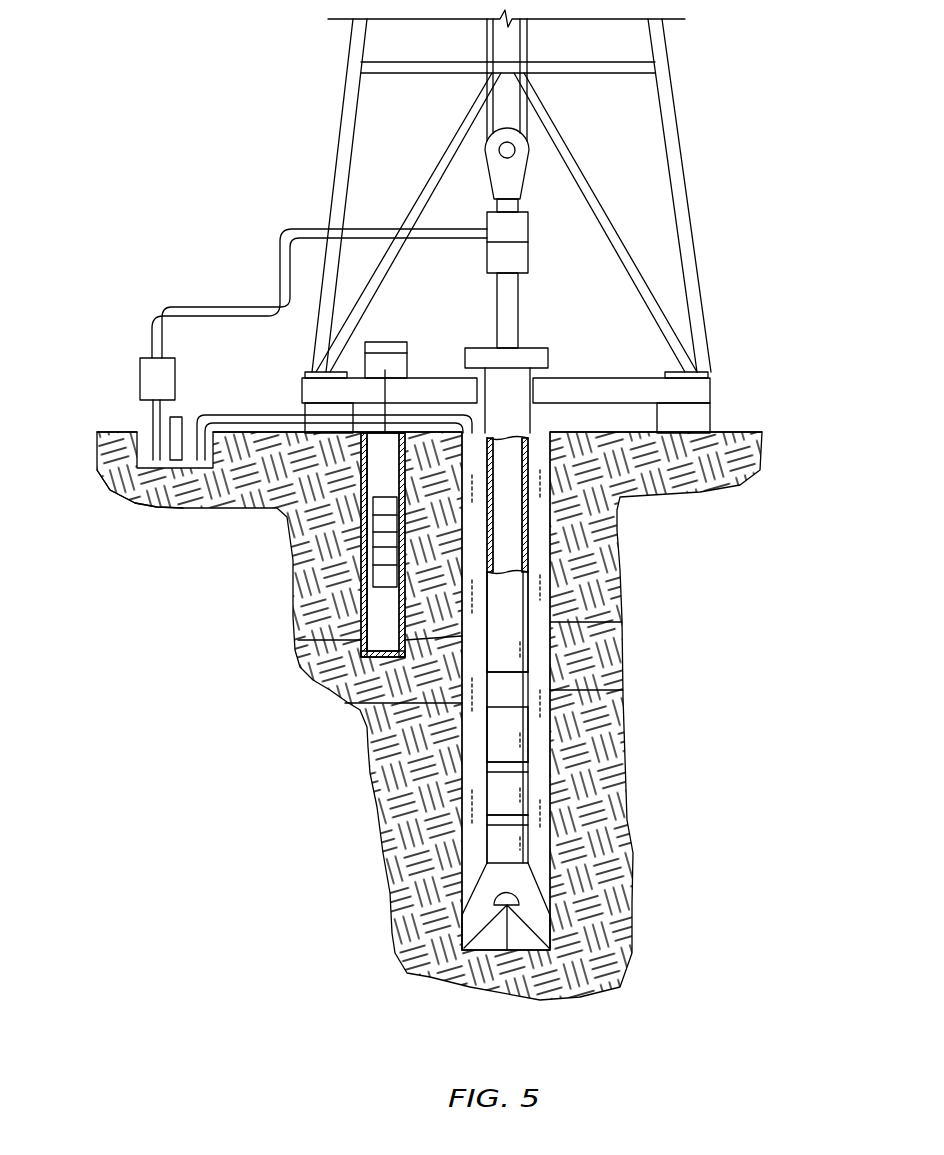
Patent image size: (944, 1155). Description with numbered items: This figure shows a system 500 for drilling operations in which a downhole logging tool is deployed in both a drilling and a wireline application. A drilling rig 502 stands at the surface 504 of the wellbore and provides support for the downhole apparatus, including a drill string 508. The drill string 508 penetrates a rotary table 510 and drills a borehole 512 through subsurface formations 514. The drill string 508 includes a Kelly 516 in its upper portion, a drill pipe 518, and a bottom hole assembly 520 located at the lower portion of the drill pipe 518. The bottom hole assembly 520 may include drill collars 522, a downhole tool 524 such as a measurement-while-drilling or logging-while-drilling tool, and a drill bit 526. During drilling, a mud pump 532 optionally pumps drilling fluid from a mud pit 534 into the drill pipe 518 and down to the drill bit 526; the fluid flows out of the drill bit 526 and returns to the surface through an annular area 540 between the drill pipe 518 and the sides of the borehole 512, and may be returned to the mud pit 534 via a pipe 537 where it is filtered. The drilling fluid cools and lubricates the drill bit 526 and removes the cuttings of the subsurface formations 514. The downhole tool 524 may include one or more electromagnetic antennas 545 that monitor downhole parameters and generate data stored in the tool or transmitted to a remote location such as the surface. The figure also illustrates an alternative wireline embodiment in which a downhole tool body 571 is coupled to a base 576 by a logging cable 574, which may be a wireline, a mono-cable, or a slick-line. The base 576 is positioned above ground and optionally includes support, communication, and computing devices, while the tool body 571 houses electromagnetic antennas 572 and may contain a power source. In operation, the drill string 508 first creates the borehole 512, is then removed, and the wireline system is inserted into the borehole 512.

The system 500 is at (197, 50).
The drilling rig 502 is at (681, 151).
The surface 504 is at (737, 433).
The drill string 508 is at (513, 470).
The rotary table 510 is at (535, 348).
The borehole 512 is at (542, 493).
The subsurface formations 514 is at (715, 510).
The Kelly 516 is at (518, 298).
The drill pipe 518 is at (512, 550).
The bottom hole assembly 520 is at (798, 572).
The drill collars 522 is at (505, 593).
The downhole tool 524 is at (508, 687).
The drill bit 526 is at (532, 897).
The mud pump 532 is at (140, 378).
The mud pit 534 is at (177, 508).
The pipe 537 is at (283, 418).
The annular area 540 is at (330, 690).
The electromagnetic antennas 545 is at (512, 822).
The downhole tool body 571 is at (362, 553).
The electromagnetic antennas 572 is at (372, 588).
The logging cable 574 is at (365, 512).
The base 576 is at (382, 340).